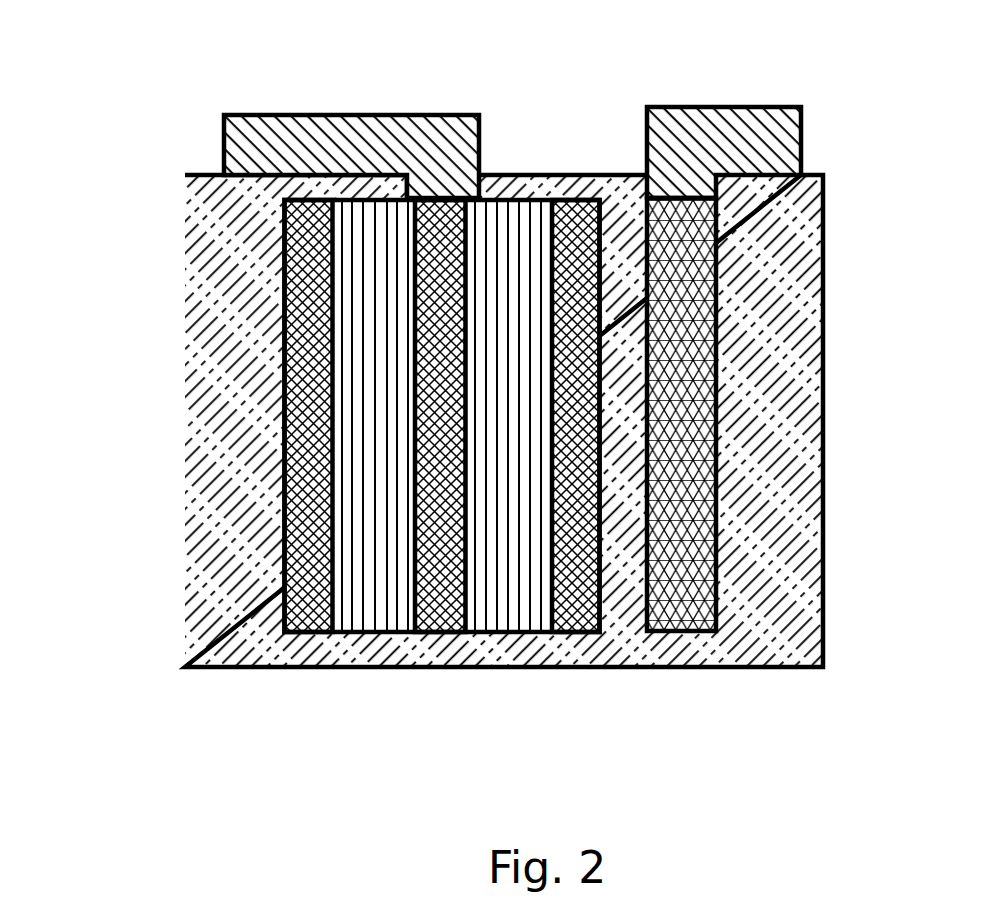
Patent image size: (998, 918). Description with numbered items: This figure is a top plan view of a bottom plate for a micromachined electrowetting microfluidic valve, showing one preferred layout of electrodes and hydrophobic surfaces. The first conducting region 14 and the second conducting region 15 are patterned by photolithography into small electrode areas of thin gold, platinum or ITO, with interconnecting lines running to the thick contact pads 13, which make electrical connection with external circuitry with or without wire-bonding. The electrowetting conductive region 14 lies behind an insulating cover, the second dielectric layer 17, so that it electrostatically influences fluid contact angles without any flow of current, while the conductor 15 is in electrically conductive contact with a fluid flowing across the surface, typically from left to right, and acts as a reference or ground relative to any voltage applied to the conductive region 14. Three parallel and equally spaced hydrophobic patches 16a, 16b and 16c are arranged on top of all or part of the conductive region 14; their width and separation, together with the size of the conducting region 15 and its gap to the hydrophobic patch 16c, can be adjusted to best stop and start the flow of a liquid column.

The contact pads 13 is at (682, 132).
The first conducting region 14 is at (505, 332).
The second conducting region 15 is at (678, 378).
The hydrophobic patch 16a is at (305, 603).
The hydrophobic patch 16b is at (442, 602).
The hydrophobic patch 16c is at (575, 608).
The second dielectric layer 17 is at (775, 509).